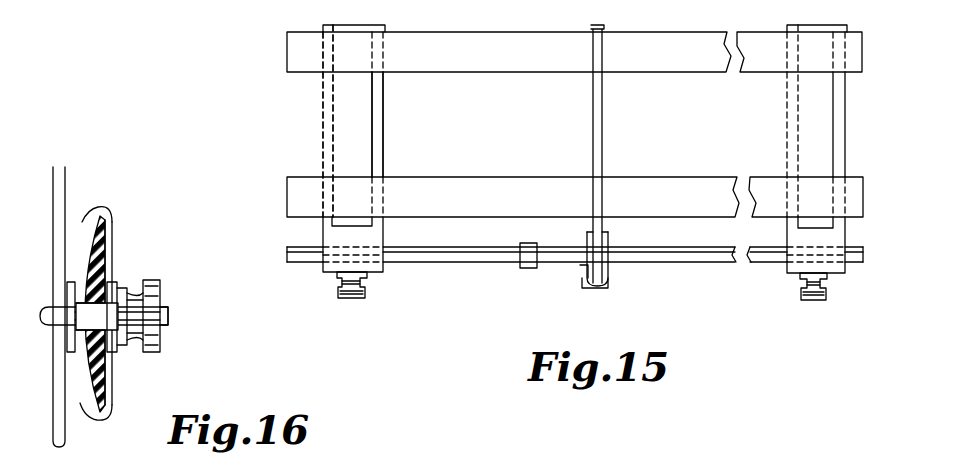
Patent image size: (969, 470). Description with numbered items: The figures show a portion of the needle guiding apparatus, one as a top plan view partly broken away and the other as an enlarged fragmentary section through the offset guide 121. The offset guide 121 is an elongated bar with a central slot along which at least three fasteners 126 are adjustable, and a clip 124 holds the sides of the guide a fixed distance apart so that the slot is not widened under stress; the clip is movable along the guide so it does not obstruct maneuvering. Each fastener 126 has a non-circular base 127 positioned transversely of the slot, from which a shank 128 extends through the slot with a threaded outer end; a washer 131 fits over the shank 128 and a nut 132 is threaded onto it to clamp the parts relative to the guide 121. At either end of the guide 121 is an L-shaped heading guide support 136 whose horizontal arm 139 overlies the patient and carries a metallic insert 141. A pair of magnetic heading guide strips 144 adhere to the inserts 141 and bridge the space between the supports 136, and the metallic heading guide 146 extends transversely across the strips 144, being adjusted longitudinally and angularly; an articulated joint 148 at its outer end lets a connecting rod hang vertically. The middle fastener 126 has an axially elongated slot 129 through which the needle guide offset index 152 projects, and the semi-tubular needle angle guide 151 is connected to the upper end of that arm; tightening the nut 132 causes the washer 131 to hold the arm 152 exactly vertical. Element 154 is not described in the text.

In FIG. 15, the offset guide 121 is at (692, 263).
In FIG. 16, the offset guide 121 is at (102, 235).
In FIG. 15, the clip 124 is at (533, 268).
In FIG. 16, the clip 124 is at (98, 212).
In FIG. 15, the fastener 126 is at (352, 300).
In FIG. 16, the fastener 126 is at (200, 322).
In FIG. 16, the non-circular base 127 is at (66, 340).
In FIG. 16, the shank 128 is at (112, 278).
In FIG. 16, the axially elongated slot 129 is at (42, 308).
In FIG. 16, the washer 131 is at (115, 355).
In FIG. 16, the nut 132 is at (150, 284).
In FIG. 15, the heading guide support 136 is at (325, 283).
In FIG. 15, the horizontal arm 139 is at (325, 152).
In FIG. 15, the metallic insert 141 is at (340, 112).
In FIG. 15, the heading guide strip 144 is at (660, 62).
In FIG. 15, the heading guide 146 is at (592, 108).
In FIG. 15, the articulated joint 148 is at (606, 232).
In FIG. 15, the needle angle guide 151 is at (613, 282).
In FIG. 16, the needle guide offset index 152 is at (62, 180).
In FIG. 15, the foot 154 is at (597, 290).